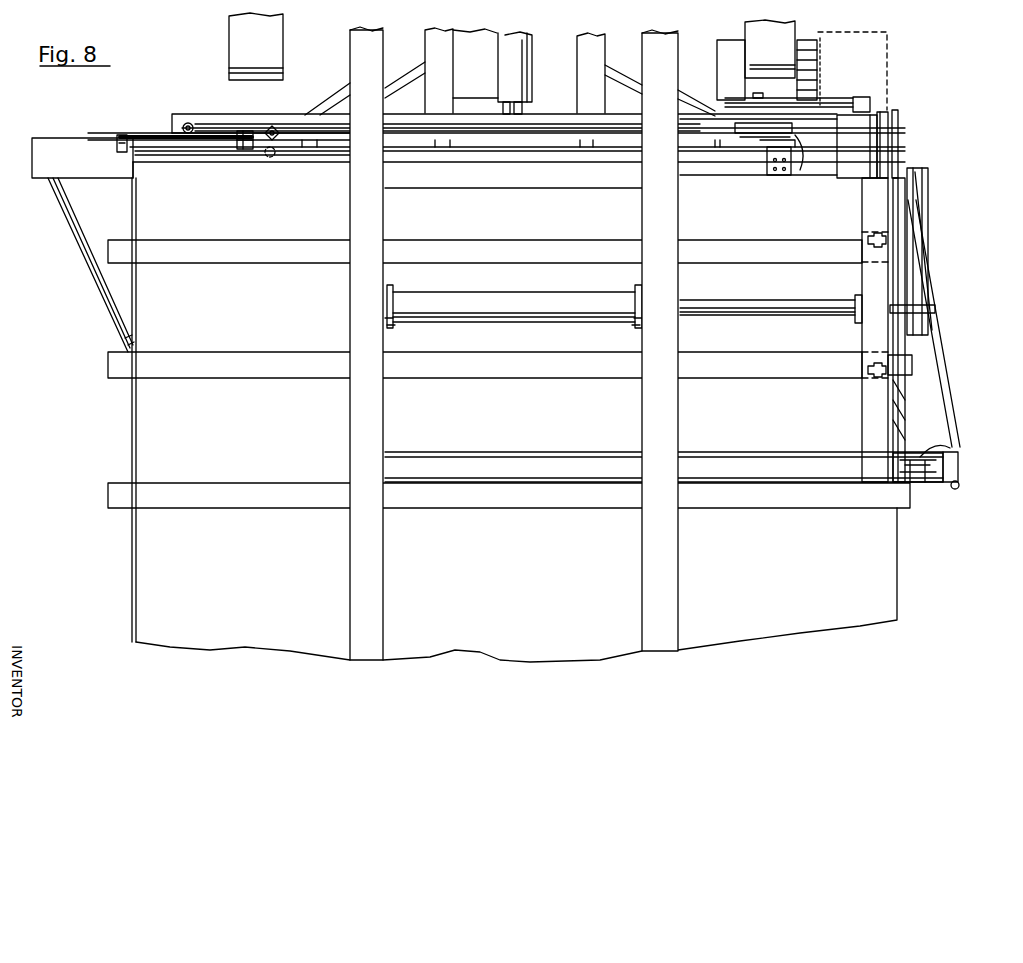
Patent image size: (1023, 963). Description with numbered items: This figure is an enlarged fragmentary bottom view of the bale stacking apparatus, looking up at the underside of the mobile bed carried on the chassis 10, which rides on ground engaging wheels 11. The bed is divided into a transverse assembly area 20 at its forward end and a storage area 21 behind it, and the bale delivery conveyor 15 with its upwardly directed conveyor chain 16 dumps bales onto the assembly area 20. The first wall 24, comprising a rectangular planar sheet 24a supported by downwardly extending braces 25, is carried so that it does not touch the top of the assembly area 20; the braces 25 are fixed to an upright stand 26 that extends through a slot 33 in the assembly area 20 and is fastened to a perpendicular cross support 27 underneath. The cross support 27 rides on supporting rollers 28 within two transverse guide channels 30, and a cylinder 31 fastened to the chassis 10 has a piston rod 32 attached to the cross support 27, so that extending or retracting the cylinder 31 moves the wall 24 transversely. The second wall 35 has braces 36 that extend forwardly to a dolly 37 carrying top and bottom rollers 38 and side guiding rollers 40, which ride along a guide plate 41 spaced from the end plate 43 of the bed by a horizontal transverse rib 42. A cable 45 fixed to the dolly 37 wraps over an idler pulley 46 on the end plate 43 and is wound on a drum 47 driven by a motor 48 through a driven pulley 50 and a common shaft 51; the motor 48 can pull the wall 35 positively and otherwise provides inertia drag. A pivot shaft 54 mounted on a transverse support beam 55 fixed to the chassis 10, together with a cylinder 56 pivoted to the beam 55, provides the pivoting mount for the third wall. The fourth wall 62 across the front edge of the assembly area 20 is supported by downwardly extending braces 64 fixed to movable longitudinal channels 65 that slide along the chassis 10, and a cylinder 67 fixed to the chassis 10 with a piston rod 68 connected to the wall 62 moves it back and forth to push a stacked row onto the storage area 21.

The mobile chassis 10 is at (378, 543).
The ground engaging wheels 11 is at (238, 32).
The bale delivery conveyor 15 is at (890, 70).
The conveyor chain 16 is at (814, 38).
The assembly area 20 is at (150, 404).
The storage area 21 is at (152, 588).
The first wall 24 is at (930, 180).
The rectangular planar sheet 24a is at (912, 197).
The braces 25 is at (931, 297).
The upright stand 26 is at (937, 309).
The cross support 27 is at (870, 402).
The supporting rollers 28 is at (862, 256).
The transverse guide channels 30 is at (770, 259).
The cylinder 31 is at (550, 309).
The piston rod 32 is at (762, 303).
The slot 33 is at (894, 302).
The second wall 35 is at (131, 204).
The braces 36 is at (78, 235).
The dolly 37 is at (78, 146).
The top and bottom rollers 38 is at (120, 151).
The side guiding rollers 40 is at (274, 127).
The guide plate 41 is at (176, 141).
The horizontal transverse rib 42 is at (319, 150).
The end plate 43 is at (207, 157).
The cable 45 is at (229, 128).
The idler pulley 46 is at (800, 172).
The winch or drum 47 is at (748, 138).
The motor 48 is at (862, 153).
The driven pulley 50 is at (740, 100).
The common shaft 51 is at (763, 147).
The pivot shaft 54 is at (923, 483).
The transverse support beam 55 is at (938, 455).
The cylinder 56 is at (950, 468).
The fourth wall 62 is at (545, 114).
The braces 64 is at (325, 110).
The movable longitudinal channels 65 is at (448, 87).
The cylinder 67 is at (520, 75).
The piston rod 68 is at (517, 104).